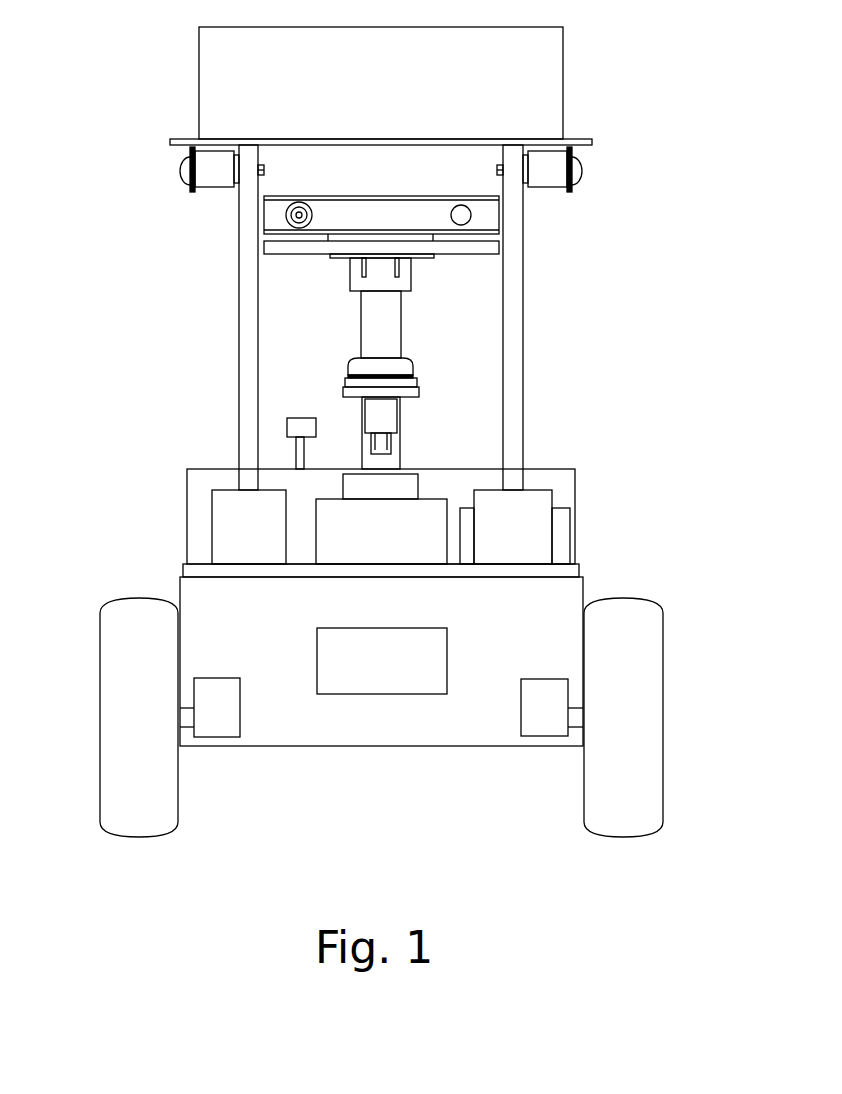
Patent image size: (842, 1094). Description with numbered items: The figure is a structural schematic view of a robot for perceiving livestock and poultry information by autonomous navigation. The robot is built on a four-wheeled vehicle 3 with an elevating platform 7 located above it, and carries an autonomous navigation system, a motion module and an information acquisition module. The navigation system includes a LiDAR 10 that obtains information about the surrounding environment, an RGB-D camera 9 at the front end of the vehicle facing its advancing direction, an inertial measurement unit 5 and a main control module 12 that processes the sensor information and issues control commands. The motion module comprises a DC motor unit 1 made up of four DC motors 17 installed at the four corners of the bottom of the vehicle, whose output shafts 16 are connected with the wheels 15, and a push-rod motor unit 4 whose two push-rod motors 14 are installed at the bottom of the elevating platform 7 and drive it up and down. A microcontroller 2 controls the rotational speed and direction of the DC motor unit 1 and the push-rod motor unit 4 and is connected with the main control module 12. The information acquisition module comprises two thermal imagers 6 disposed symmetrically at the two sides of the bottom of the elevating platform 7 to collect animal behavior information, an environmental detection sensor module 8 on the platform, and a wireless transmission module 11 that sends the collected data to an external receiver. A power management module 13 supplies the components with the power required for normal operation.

The direct current (DC) motor unit 1 is at (139, 644).
The microcontroller 2 is at (242, 601).
The four-wheeled vehicle 3 is at (310, 611).
The push-rod motor unit 4 is at (162, 504).
The inertial measurement unit 5 is at (177, 420).
The thermal imager 6 is at (138, 173).
The elevating platform 7 is at (315, 116).
The environmental detection sensor module 8 is at (300, 79).
The red-green-blue-depth (RGB-D) camera 9 is at (496, 233).
The light detection and ranging (LiDAR) 10 is at (546, 363).
The wireless transmission module 11 is at (546, 444).
The main control module 12 is at (532, 519).
The power management module 13 is at (650, 536).
The push-rod motor 14 is at (611, 543).
The wheel 15 is at (666, 717).
The output shaft 16 is at (658, 687).
The DC motor 17 is at (634, 707).